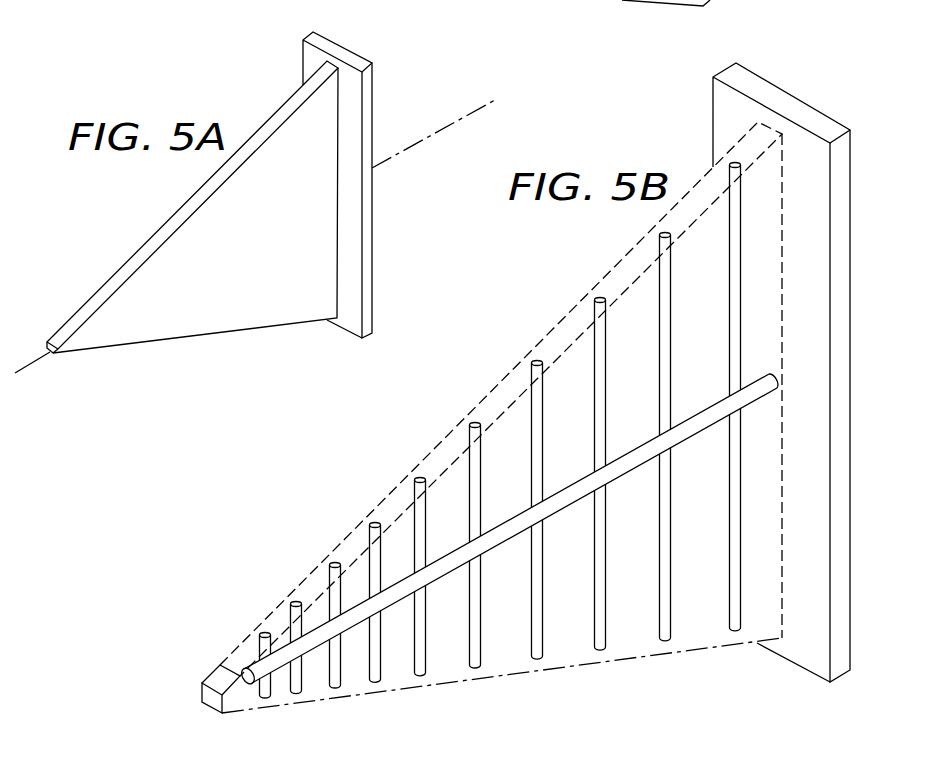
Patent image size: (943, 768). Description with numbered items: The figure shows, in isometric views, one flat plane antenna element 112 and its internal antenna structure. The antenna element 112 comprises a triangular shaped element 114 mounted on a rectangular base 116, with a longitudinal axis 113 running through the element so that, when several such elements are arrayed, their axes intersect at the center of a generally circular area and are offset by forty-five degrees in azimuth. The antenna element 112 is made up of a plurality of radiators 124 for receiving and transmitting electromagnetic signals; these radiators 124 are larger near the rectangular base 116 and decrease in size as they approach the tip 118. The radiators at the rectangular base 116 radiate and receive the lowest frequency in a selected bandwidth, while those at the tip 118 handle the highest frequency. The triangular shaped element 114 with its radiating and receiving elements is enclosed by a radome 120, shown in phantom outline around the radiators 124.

In FIG. 5A, the antenna element 112 is at (158, 370).
In FIG. 5B, the antenna element 112 is at (787, 67).
In FIG. 5A, the longitudinal axis 113 is at (435, 133).
In FIG. 5A, the triangular shaped element 114 is at (277, 249).
In FIG. 5A, the rectangular base 116 is at (352, 323).
In FIG. 5B, the rectangular base 116 is at (810, 153).
In FIG. 5B, the tip 118 is at (202, 692).
In FIG. 5B, the radome 120 is at (570, 656).
In FIG. 5B, the radiators 124 is at (368, 572).